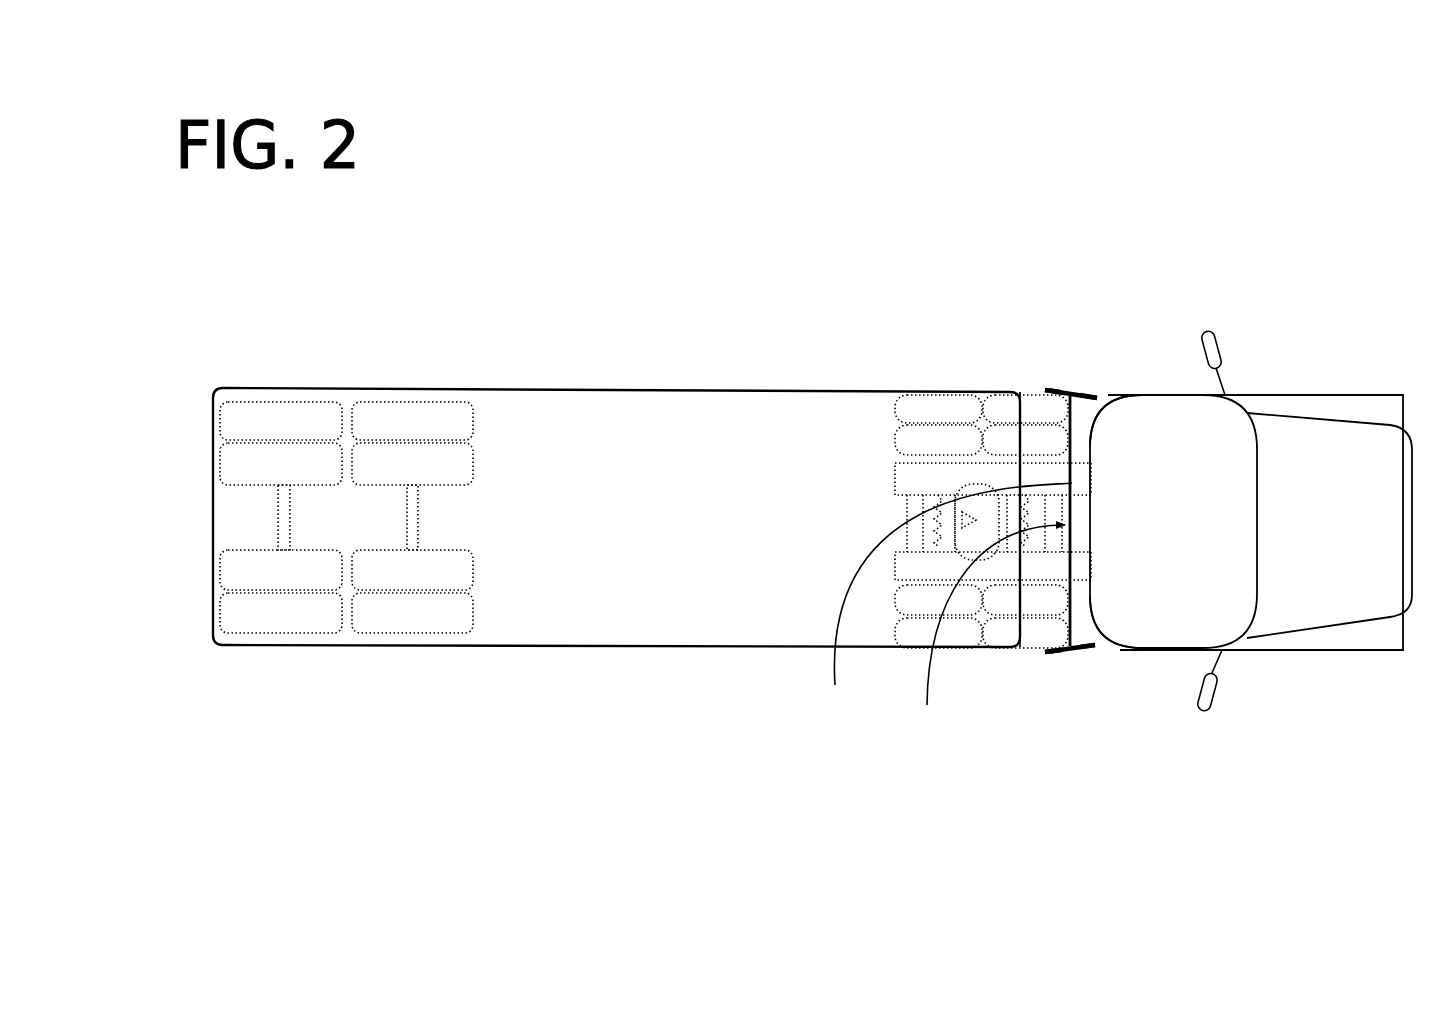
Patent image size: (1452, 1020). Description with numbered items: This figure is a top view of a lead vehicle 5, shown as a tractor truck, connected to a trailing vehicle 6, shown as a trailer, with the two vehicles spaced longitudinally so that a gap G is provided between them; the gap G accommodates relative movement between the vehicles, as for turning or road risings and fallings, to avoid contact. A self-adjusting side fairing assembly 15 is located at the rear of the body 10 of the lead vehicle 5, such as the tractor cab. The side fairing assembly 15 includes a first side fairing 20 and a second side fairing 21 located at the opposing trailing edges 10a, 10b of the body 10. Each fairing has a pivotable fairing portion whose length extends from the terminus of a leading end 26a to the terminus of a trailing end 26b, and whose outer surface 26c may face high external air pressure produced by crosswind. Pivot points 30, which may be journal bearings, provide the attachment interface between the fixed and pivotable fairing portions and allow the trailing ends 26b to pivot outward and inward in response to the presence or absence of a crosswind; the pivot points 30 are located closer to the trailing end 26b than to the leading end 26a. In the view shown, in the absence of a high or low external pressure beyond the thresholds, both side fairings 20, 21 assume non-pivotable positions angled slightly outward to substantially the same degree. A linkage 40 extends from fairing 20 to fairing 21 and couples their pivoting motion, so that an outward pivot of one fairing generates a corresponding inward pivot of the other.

The lead vehicle 5 is at (1312, 438).
The trailing vehicle 6 is at (775, 412).
The body 10 is at (1155, 490).
The trailing edge 10a is at (1110, 396).
The trailing edge 10b is at (1121, 649).
The self-adjusting side fairing assembly 15 is at (991, 628).
The first side fairing 20 is at (1067, 388).
The second side fairing 21 is at (1065, 657).
The leading end 26a is at (1094, 396).
The trailing end 26b is at (1035, 425).
The outer surface 26c is at (1078, 392).
The pivot point 30 is at (1056, 391).
The linkage 40 is at (947, 595).
The gap G is at (1045, 390).